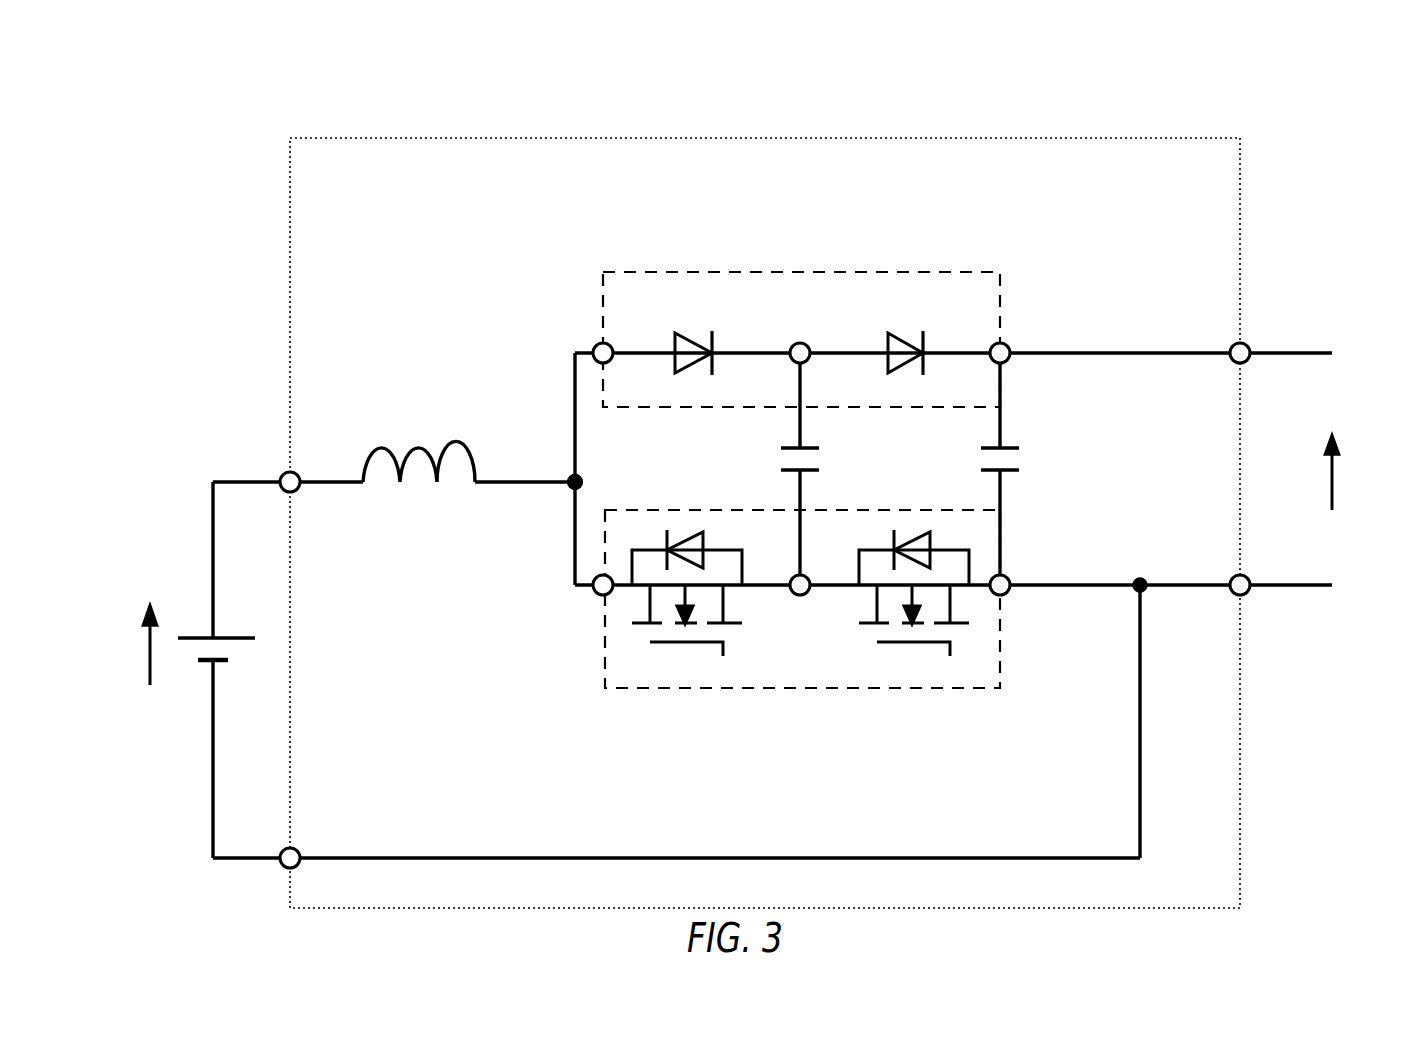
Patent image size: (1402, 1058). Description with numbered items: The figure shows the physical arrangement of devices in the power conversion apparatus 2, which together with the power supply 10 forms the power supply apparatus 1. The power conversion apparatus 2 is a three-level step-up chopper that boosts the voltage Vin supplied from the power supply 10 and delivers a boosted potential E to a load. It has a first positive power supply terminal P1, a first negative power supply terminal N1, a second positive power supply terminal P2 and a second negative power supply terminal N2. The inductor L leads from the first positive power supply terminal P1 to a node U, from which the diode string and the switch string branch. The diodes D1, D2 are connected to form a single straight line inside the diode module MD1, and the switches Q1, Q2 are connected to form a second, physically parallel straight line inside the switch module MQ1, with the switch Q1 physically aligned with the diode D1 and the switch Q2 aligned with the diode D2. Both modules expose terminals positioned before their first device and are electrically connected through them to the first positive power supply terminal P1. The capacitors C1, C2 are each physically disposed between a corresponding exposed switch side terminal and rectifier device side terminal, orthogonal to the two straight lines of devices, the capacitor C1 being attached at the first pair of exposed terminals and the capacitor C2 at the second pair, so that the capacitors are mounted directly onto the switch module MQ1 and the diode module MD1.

The power supply apparatus 1 is at (492, 92).
The power conversion apparatus 2 is at (902, 137).
The power supply 10 is at (180, 636).
The inductor L is at (381, 445).
The connection node U is at (555, 455).
The first positive power supply terminal P1 is at (261, 459).
The first negative power supply terminal N1 is at (263, 886).
The second positive power supply terminal P2 is at (1275, 327).
The second negative power supply terminal N2 is at (1276, 608).
The diode D1 is at (688, 338).
The diode D2 is at (898, 338).
The capacitor C1 is at (822, 470).
The capacitor C2 is at (1022, 470).
The switch Q1 is at (718, 650).
The switch Q2 is at (946, 650).
The diode module MD1 is at (970, 271).
The switch module MQ1 is at (996, 690).
The voltage Vin is at (110, 643).
The potential E is at (1358, 469).